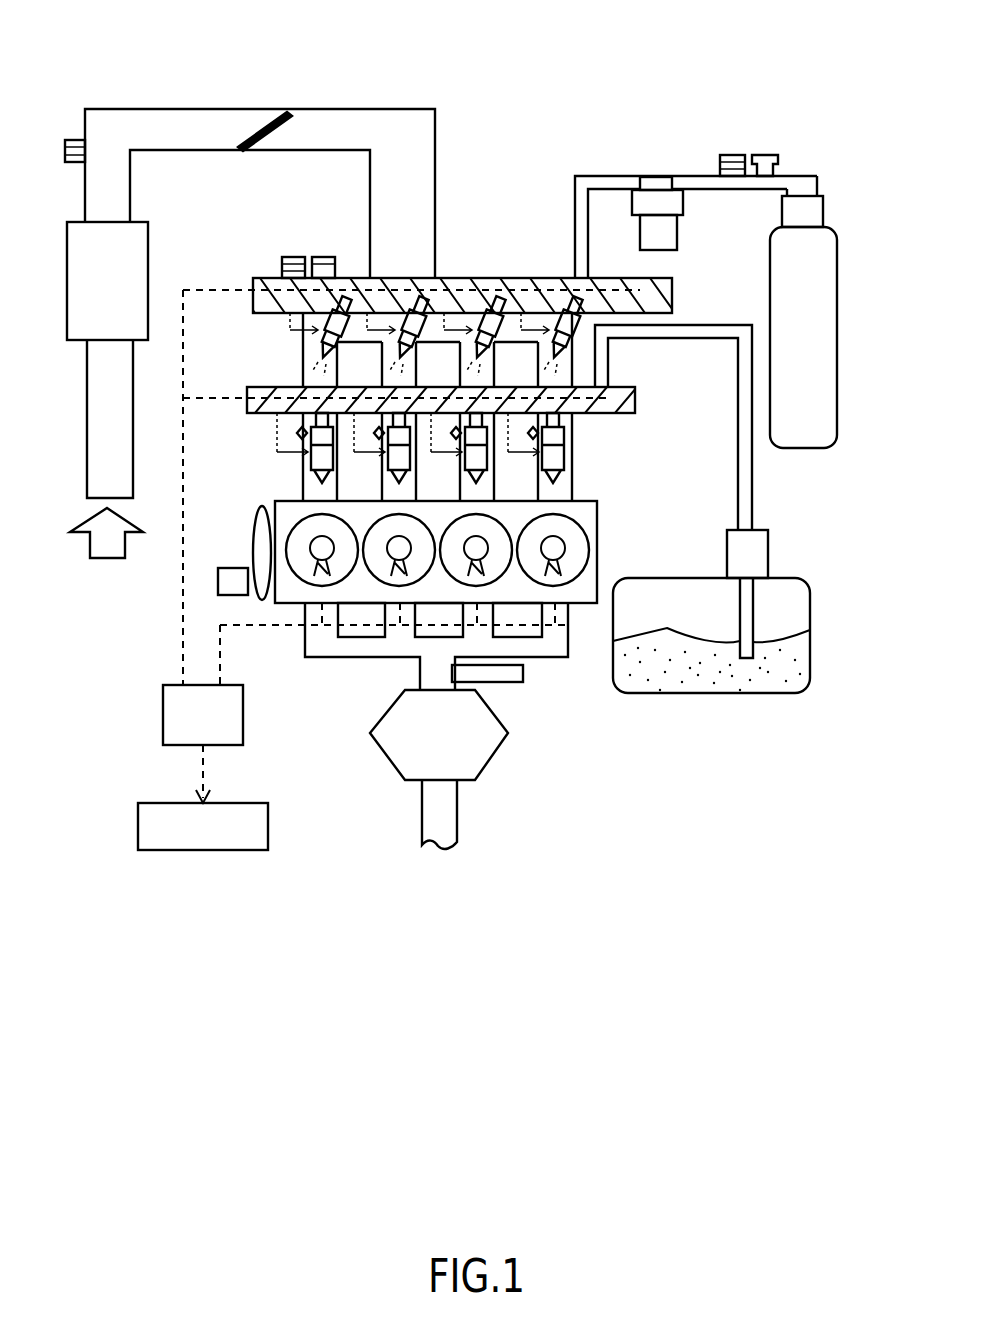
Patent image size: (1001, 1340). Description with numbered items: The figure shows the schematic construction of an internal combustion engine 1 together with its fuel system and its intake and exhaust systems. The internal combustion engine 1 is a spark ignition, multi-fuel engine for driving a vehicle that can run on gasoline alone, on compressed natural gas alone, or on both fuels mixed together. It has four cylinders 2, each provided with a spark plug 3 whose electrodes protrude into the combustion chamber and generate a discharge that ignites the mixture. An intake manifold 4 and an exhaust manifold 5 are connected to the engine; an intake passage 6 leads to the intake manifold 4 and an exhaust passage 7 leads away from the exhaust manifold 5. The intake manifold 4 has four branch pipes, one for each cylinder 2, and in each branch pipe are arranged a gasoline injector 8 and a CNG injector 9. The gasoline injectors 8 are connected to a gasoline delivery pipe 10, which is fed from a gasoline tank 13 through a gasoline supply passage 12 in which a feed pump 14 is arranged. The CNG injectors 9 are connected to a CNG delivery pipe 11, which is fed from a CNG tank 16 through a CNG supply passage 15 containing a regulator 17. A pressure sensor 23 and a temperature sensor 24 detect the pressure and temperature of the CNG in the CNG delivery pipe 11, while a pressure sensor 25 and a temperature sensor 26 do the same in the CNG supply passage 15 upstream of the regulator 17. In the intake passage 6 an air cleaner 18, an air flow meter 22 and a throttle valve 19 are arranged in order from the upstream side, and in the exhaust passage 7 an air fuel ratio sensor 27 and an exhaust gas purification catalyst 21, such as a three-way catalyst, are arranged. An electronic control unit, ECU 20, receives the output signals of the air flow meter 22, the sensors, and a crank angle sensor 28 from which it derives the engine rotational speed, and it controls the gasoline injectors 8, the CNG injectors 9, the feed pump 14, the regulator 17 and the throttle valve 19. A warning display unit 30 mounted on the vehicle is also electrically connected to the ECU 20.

The internal combustion engine 1 is at (290, 505).
The cylinder 2 is at (597, 512).
The spark plug 3 is at (565, 548).
The intake manifold 4 is at (295, 370).
The exhaust manifold 5 is at (340, 657).
The intake passage 6 is at (340, 108).
The exhaust passage 7 is at (457, 812).
The gasoline injector 8 is at (580, 452).
The CNG injector 9 is at (612, 345).
The gasoline delivery pipe 10 is at (637, 400).
The CNG delivery pipe 11 is at (672, 302).
The gasoline supply passage 12 is at (752, 490).
The gasoline tank 13 is at (693, 693).
The feed pump 14 is at (768, 552).
The CNG supply passage 15 is at (600, 176).
The CNG tank 16 is at (845, 298).
The regulator 17 is at (688, 205).
The air cleaner 18 is at (67, 280).
The throttle valve 19 is at (263, 117).
The electronic control unit (ECU) 20 is at (163, 716).
The exhaust gas purification catalyst 21 is at (385, 760).
The air flow meter 22 is at (72, 140).
The pressure sensor 23 is at (290, 256).
The temperature sensor 24 is at (323, 256).
The pressure sensor 25 is at (727, 154).
The temperature sensor 26 is at (765, 154).
The air fuel ratio sensor 27 is at (510, 682).
The crank angle sensor 28 is at (233, 568).
The warning display unit 30 is at (138, 830).